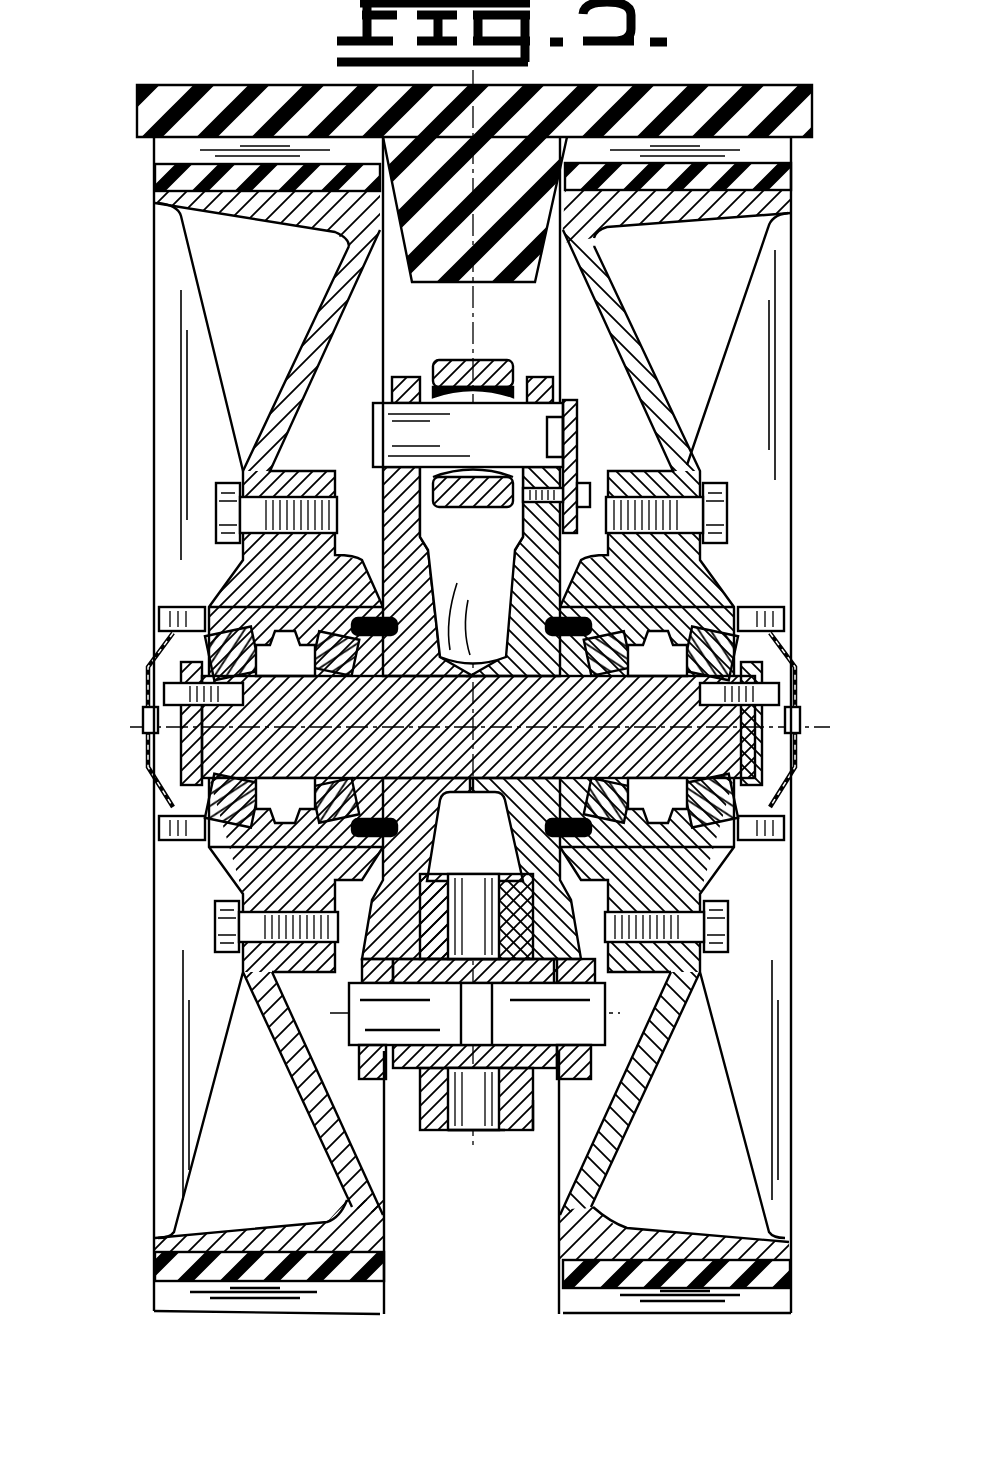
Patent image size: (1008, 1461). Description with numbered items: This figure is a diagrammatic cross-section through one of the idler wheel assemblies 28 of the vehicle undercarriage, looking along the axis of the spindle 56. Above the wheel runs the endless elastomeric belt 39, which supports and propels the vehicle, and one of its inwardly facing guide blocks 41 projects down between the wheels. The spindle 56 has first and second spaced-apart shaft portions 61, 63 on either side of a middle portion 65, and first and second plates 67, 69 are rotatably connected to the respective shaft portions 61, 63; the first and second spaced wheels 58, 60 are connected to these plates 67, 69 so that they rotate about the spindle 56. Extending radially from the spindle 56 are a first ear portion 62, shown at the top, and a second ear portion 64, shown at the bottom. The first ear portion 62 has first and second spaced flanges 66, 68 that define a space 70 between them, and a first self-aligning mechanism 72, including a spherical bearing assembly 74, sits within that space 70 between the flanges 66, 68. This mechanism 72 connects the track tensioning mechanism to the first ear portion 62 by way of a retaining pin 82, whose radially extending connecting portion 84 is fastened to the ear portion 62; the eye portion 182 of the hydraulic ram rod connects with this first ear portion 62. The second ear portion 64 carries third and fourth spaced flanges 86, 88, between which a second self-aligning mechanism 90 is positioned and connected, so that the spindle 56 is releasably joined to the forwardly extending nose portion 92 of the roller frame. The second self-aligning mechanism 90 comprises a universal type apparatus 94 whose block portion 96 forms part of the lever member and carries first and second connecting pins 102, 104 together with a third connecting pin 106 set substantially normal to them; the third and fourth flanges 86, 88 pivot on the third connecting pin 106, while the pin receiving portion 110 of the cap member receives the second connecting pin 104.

The idler wheel assembly 28 is at (802, 1143).
The endless elastomeric belt 39 is at (136, 120).
The guide blocks 41 is at (414, 236).
The spindle 56 is at (539, 700).
The first wheel 58 is at (575, 1255).
The second wheel 60 is at (386, 1264).
The first shaft portion 61 is at (762, 750).
The first ear portion 62 is at (381, 493).
The second shaft portion 63 is at (203, 748).
The second ear portion 64 is at (357, 1081).
The middle portion 65 is at (462, 640).
The first flange 66 is at (540, 566).
The first plate 67 is at (656, 590).
The second flange 68 is at (403, 567).
The second plate 69 is at (257, 597).
The space 70 is at (433, 658).
The first self-aligning mechanism 72 is at (458, 363).
The spherical bearing assembly 74 is at (457, 505).
The retaining pin 82 is at (512, 434).
The connecting portion 84 is at (567, 478).
The third flange 86 is at (574, 884).
The fourth flange 88 is at (376, 884).
The second self-aligning mechanism 90 is at (499, 1146).
The nose portion 92 is at (442, 836).
The universal type apparatus 94 is at (333, 1008).
The block portion 96 is at (595, 970).
The first connecting pin 102 is at (494, 929).
The second connecting pin 104 is at (501, 1120).
The third connecting pin 106 is at (563, 1035).
The pin receiving portion 110 is at (536, 1106).
The eye portion 182 is at (489, 360).